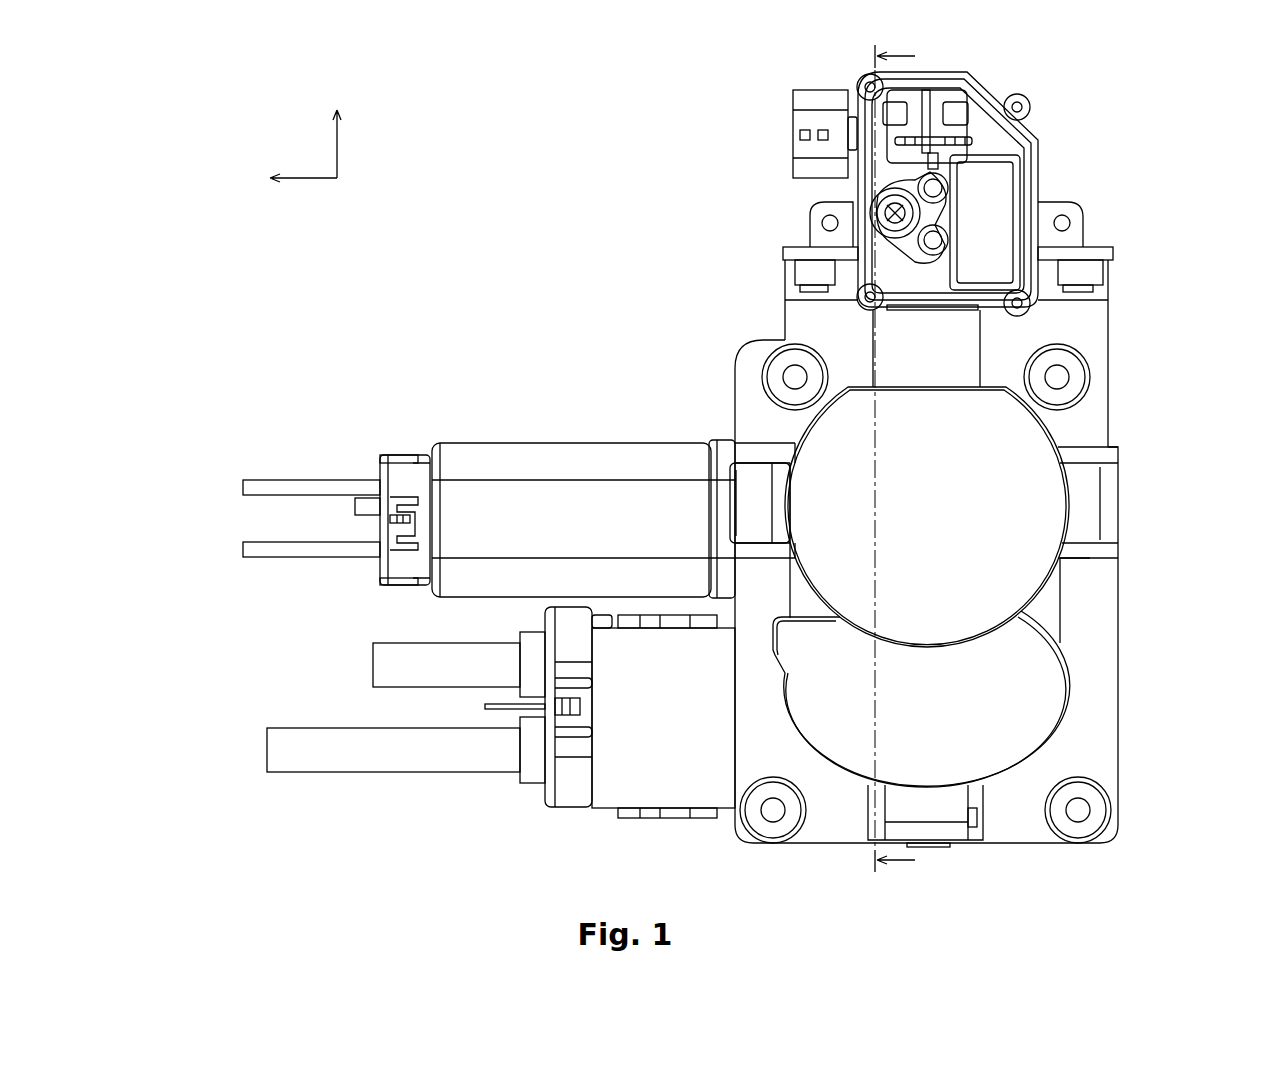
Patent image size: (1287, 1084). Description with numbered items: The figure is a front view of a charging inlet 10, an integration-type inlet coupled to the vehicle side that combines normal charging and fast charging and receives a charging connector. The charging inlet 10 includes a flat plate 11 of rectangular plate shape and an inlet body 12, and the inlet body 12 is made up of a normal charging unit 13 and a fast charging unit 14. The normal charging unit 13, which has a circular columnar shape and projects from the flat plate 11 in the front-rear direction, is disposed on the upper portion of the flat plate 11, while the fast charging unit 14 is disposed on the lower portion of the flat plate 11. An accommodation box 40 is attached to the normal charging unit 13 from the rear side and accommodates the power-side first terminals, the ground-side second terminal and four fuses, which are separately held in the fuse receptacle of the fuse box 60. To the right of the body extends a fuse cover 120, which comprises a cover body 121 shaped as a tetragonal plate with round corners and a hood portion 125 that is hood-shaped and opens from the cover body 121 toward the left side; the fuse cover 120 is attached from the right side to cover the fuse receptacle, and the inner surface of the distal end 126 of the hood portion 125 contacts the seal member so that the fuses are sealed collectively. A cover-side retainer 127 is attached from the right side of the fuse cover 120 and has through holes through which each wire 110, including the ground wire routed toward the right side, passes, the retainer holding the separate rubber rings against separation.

The charging inlet 10 is at (1207, 153).
The flat plate 11 is at (1102, 336).
The inlet body 12 is at (1203, 460).
The normal charging unit 13 is at (1024, 497).
The fast charging unit 14 is at (1025, 709).
The accommodation box 40 is at (583, 326).
The fuse box 60 is at (549, 421).
The wire 110 is at (245, 548).
The fuse cover 120 is at (500, 455).
The cover body 121 is at (420, 450).
The hood portion 125 is at (625, 458).
The distal end 126 is at (726, 445).
The cover-side retainer 127 is at (367, 452).